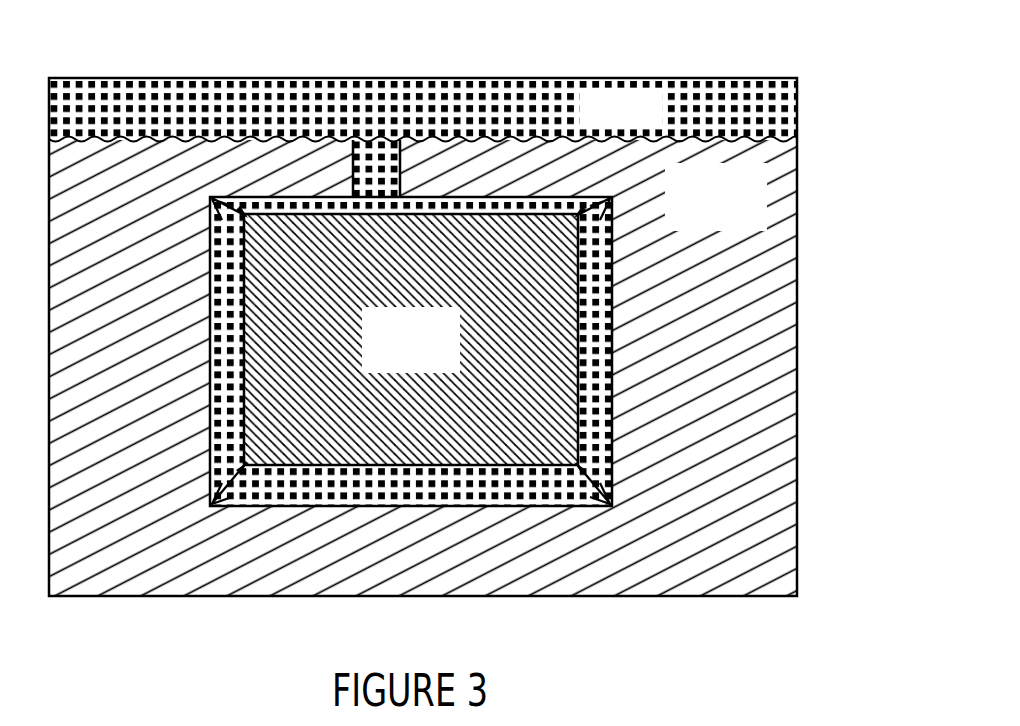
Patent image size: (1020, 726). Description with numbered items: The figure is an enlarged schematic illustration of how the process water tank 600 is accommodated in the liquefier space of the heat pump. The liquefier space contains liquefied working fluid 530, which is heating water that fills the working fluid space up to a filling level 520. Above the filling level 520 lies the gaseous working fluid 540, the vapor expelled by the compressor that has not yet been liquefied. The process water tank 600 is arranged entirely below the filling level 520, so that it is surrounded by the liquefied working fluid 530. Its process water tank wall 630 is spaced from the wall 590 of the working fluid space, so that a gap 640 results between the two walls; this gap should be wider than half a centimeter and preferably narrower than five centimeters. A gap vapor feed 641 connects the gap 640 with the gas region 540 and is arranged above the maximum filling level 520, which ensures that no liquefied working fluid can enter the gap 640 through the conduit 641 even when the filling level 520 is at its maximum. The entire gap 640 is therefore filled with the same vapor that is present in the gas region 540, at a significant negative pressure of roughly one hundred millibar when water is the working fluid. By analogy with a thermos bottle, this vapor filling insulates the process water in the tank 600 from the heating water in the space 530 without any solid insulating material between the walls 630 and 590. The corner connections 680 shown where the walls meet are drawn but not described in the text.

The filling level 520 is at (798, 139).
The liquefied working fluid 530 is at (783, 245).
The gaseous working fluid 540 is at (738, 88).
The wall of the working fluid space 590 is at (342, 508).
The process water tank 600 is at (557, 378).
The process water tank wall 630 is at (428, 465).
The gap 640 is at (522, 490).
The gap vapor feed 641 is at (360, 130).
The corner connection elements 680 is at (228, 500).